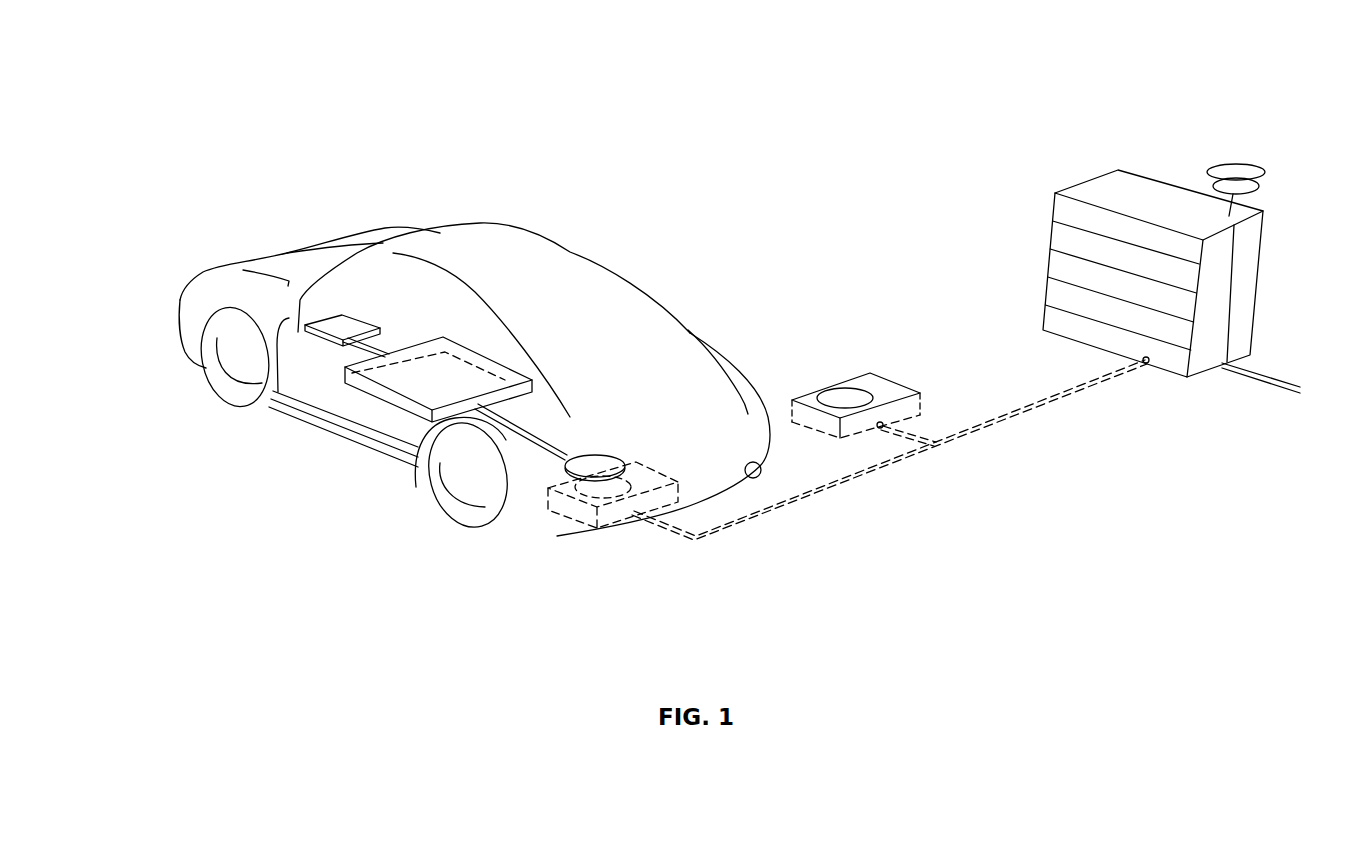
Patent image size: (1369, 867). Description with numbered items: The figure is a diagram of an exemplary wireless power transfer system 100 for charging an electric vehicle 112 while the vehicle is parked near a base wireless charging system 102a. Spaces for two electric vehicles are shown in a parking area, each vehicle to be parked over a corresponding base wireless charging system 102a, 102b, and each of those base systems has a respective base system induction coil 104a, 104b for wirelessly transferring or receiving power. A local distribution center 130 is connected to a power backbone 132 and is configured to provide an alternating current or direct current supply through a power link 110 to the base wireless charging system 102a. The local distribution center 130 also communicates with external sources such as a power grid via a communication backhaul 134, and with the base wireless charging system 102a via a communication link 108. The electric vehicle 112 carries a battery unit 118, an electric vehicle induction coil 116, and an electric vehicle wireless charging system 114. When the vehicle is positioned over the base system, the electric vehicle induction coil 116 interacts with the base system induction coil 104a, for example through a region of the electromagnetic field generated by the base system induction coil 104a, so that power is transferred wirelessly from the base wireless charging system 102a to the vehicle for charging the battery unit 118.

The wireless power transfer system 100 is at (470, 96).
The base wireless charging system 102a is at (548, 488).
The base wireless charging system 102b is at (812, 390).
The base system induction coil 104a is at (645, 467).
The base system induction coil 104b is at (857, 388).
The communication link 108 is at (1037, 405).
The power link 110 is at (1023, 412).
The electric vehicle 112 is at (287, 252).
The electric vehicle wireless charging system 114 is at (352, 365).
The electric vehicle induction coil 116 is at (594, 460).
The battery unit 118 is at (358, 318).
The local distribution center 130 is at (1088, 185).
The power backbone 132 is at (1274, 387).
The communication backhaul 134 is at (1238, 163).